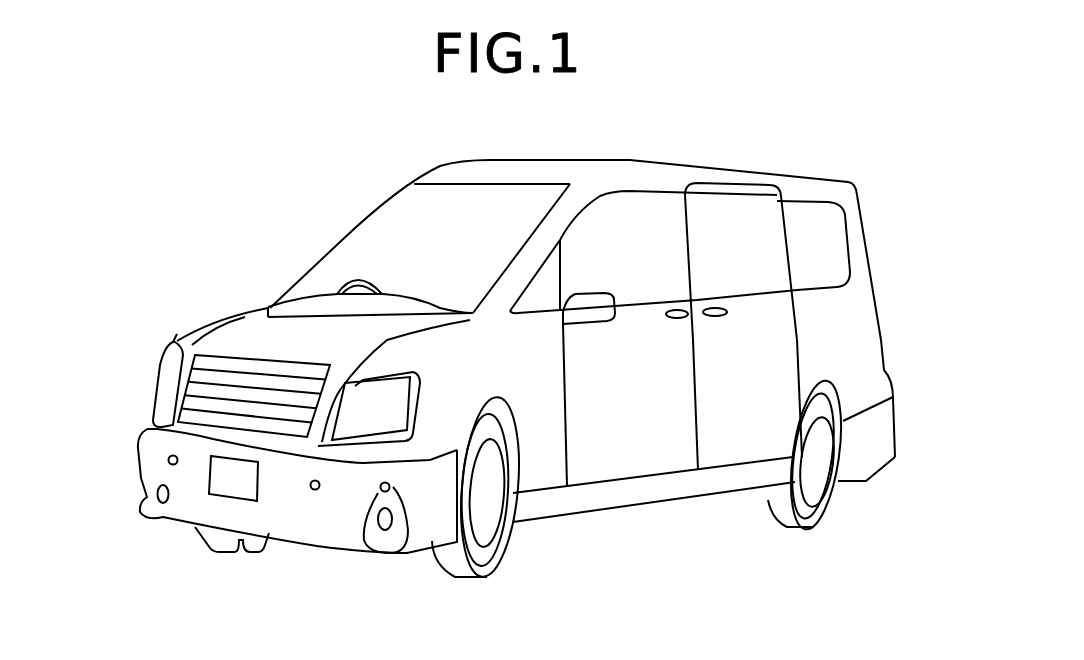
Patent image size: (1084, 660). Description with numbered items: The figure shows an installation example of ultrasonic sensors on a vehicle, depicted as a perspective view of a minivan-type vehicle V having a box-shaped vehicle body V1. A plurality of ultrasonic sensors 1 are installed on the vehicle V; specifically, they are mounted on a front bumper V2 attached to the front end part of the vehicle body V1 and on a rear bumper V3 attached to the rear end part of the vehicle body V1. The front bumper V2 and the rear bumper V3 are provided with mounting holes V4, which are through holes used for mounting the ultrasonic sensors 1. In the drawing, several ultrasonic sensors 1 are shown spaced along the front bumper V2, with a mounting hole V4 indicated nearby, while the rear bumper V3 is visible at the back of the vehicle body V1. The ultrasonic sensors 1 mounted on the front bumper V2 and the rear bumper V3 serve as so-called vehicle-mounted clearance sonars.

The vehicle V is at (865, 170).
The vehicle body V1 is at (860, 340).
The front bumper V2 is at (147, 452).
The rear bumper V3 is at (886, 420).
The mounting hole V4 is at (406, 548).
The ultrasonic sensor 1 is at (175, 464).